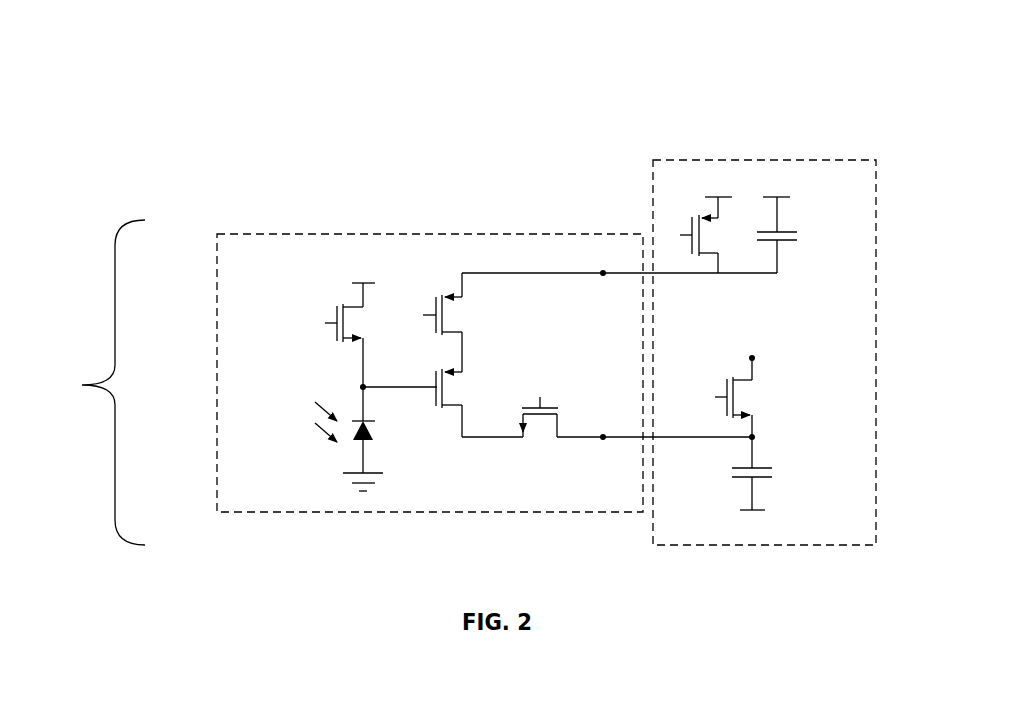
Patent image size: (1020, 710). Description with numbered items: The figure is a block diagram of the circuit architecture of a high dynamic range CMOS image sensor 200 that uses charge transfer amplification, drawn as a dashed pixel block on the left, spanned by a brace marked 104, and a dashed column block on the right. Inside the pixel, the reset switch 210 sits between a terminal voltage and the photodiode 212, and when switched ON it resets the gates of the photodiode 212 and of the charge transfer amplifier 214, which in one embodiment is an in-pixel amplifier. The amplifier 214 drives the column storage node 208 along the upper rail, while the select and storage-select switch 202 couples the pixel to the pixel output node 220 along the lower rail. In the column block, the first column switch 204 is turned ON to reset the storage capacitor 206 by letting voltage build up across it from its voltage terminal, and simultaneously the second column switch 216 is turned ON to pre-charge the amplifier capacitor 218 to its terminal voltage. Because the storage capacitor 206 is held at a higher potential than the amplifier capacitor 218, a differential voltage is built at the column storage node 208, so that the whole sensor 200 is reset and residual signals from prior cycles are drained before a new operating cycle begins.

The CMOS image sensor 200 is at (748, 108).
The S1 switch 204 is at (648, 222).
The COL_STR node 208 is at (590, 243).
The pixel array 104 is at (117, 207).
The reset switch S_RST 210 is at (273, 320).
The photodiode PD 212 is at (340, 387).
The charge transfer amplifier 214 is at (431, 414).
The S_SEL and S_STR switch 202 is at (540, 425).
The pixel output node PIXEL O/P 220 is at (603, 383).
The switch S2 216 is at (697, 372).
The storage capacitor C_STR 206 is at (824, 229).
The amplifier capacitor C_AMP 218 is at (828, 471).